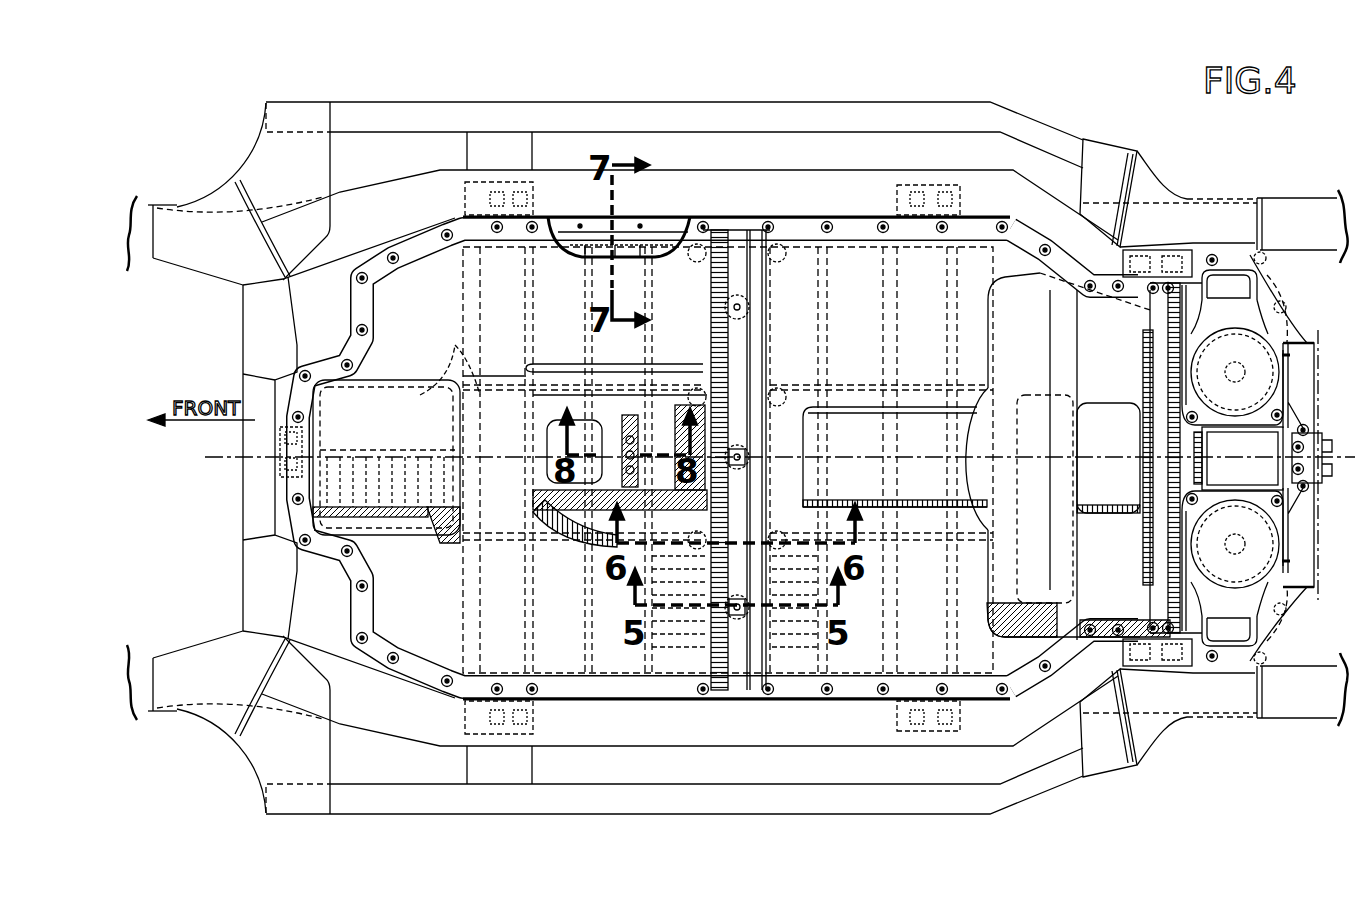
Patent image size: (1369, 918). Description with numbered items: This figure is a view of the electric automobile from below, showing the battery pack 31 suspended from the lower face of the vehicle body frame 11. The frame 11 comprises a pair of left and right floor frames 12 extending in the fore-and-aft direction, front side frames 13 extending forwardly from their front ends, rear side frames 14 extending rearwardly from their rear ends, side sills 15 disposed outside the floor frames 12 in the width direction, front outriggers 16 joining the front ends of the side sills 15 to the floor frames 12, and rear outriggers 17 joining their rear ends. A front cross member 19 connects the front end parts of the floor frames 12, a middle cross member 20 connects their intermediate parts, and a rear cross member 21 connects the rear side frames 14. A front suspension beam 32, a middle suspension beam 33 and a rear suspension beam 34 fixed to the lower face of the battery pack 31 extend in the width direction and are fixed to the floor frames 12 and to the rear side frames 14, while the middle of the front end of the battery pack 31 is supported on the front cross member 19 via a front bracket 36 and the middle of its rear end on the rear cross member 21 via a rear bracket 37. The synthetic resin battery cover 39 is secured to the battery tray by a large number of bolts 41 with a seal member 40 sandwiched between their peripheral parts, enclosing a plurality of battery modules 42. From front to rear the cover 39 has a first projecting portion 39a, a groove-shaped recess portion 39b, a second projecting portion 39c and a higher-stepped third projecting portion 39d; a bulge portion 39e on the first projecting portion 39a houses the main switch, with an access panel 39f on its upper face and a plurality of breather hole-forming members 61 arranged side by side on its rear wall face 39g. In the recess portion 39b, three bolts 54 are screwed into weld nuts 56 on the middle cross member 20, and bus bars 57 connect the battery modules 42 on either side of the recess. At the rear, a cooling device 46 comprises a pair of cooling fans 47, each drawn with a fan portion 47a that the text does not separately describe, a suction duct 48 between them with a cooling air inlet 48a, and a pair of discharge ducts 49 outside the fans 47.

The vehicle body frame 11 is at (878, 102).
The floor frame 12 is at (845, 185).
The front side frame 13 is at (148, 215).
The rear side frame 14 is at (1298, 215).
The side sill 15 is at (742, 102).
The front outrigger 16 is at (260, 158).
The rear outrigger 17 is at (1152, 185).
The front cross member 19 is at (277, 507).
The middle cross member 20 is at (812, 410).
The rear cross member 21 is at (1300, 278).
The battery pack 31 is at (563, 190).
The front suspension beam 32 is at (490, 735).
The middle suspension beam 33 is at (925, 735).
The rear suspension beam 34 is at (1157, 665).
The front bracket 36 is at (280, 442).
The rear bracket 37 is at (1325, 468).
The battery cover 39 is at (415, 248).
The first projecting portion 39a is at (563, 680).
The recess portion 39b is at (730, 268).
The second projecting portion 39c is at (852, 680).
The third projecting portion 39d is at (1078, 638).
The bulge portion 39e is at (555, 368).
The access panel 39f is at (547, 470).
The wall face 39g is at (640, 430).
The seal member 40 is at (660, 232).
The bolt 41 is at (1002, 222).
The battery module 42 is at (583, 227).
The cooling device 46 is at (1293, 405).
The cooling fan 47 is at (1288, 352).
The motor mounting flange 47a is at (1290, 362).
The suction duct 48 is at (1305, 433).
The cooling air inlet 48a is at (1205, 445).
The discharge duct 49 is at (1228, 282).
The bolt 54 is at (750, 312).
The weld nut 56 is at (745, 462).
The bus bar 57 is at (782, 262).
The breather hole-forming member 61 is at (636, 440).